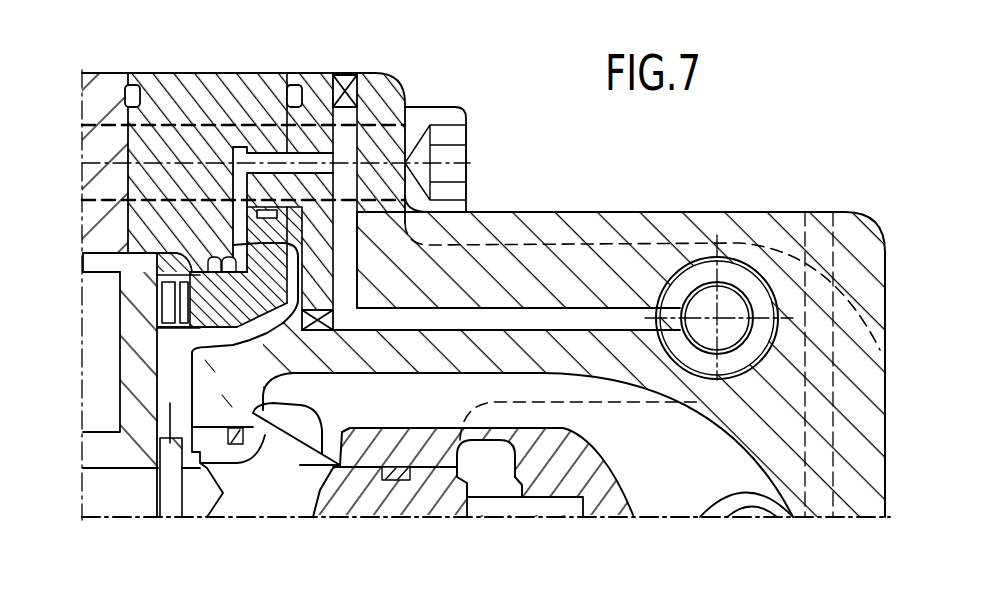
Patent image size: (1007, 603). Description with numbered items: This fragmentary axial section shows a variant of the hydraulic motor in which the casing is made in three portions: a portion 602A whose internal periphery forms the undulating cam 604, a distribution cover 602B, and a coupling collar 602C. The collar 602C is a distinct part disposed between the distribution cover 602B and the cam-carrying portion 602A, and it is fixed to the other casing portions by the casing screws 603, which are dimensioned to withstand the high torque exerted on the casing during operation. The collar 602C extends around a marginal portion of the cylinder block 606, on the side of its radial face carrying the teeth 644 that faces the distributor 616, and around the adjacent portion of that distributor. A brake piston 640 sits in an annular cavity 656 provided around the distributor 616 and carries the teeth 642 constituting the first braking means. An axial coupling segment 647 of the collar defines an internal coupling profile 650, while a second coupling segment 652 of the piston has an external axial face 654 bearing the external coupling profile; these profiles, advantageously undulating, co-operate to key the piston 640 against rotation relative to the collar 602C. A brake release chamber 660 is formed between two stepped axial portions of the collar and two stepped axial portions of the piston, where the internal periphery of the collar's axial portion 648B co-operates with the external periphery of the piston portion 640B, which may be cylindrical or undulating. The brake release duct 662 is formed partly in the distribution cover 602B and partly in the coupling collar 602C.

The casing portion 602A is at (101, 90).
The distribution cover 602B is at (672, 227).
The coupling collar 602C is at (195, 87).
The screws 603 is at (437, 113).
The undulating cam 604 is at (103, 263).
The cylinder block 606 is at (137, 390).
The distributor 616 is at (362, 500).
The brake piston 640 is at (271, 319).
The piston portion 640B is at (277, 212).
The teeth 642 is at (182, 322).
The teeth 644 is at (172, 305).
The coupling segment 647 is at (223, 272).
The axial portion of coupling collar 648B is at (267, 133).
The internal coupling profile 650 is at (167, 272).
The second coupling segment 652 is at (231, 330).
The external axial face 654 is at (240, 267).
The annular cavity 656 is at (170, 405).
The brake release chamber 660 is at (298, 243).
The brake release duct 662 is at (553, 325).